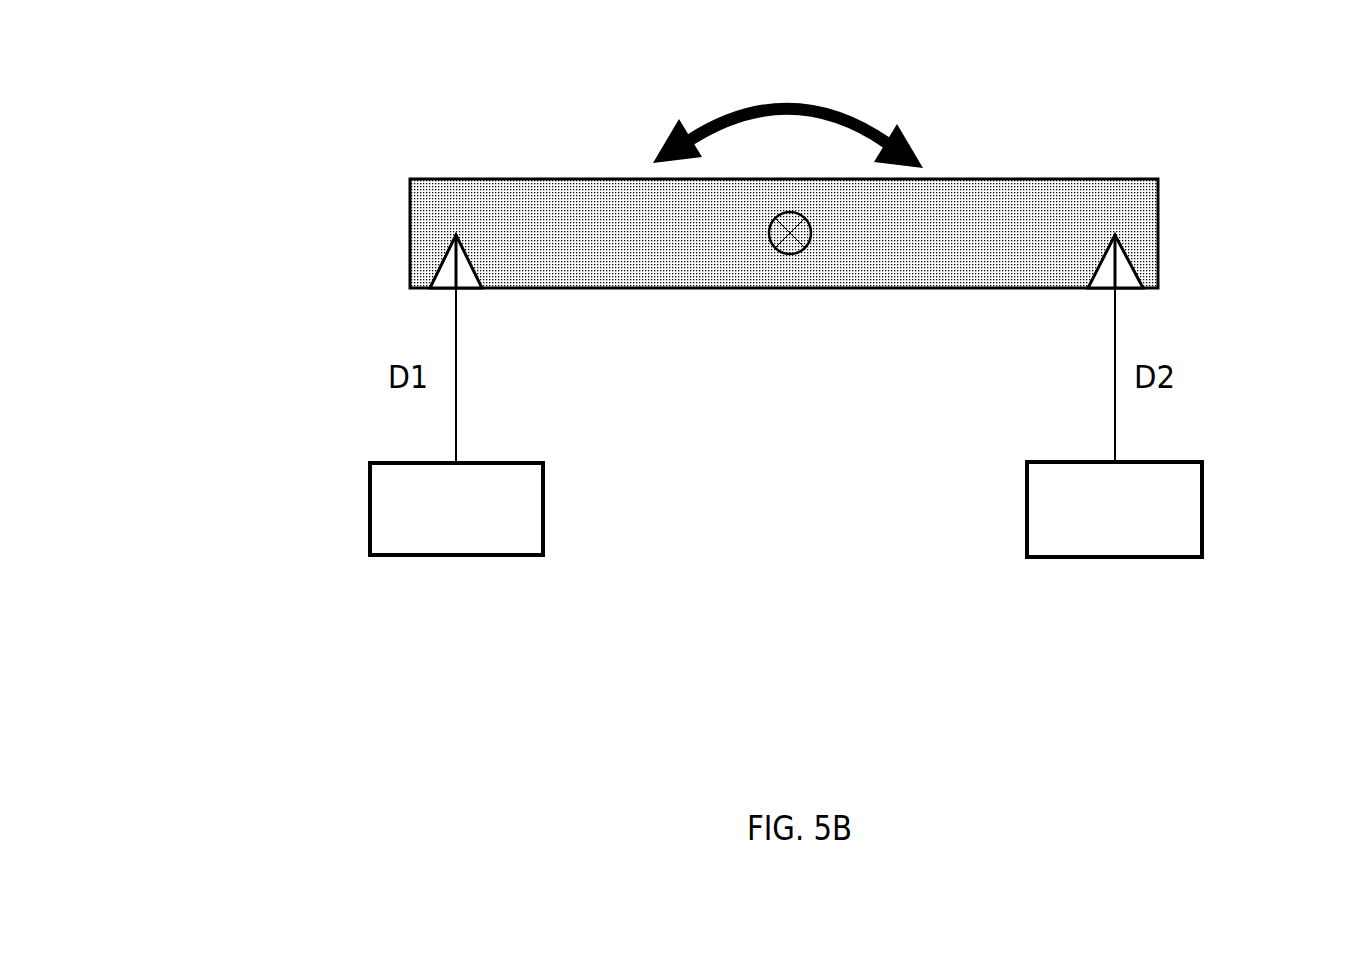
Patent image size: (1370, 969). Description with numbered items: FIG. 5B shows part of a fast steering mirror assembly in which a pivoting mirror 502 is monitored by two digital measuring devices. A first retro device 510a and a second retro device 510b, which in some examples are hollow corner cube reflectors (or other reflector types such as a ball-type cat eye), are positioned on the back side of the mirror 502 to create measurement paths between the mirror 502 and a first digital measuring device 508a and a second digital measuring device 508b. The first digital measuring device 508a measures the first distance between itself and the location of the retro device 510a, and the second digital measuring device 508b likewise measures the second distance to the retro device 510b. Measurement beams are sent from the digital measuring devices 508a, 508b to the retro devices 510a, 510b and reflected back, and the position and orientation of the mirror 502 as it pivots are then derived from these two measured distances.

The mirror 502 is at (987, 177).
The first retro device 510a is at (438, 265).
The second retro device 510b is at (1133, 268).
The first digital measuring device 508a is at (370, 513).
The second digital measuring device 508b is at (1203, 522).